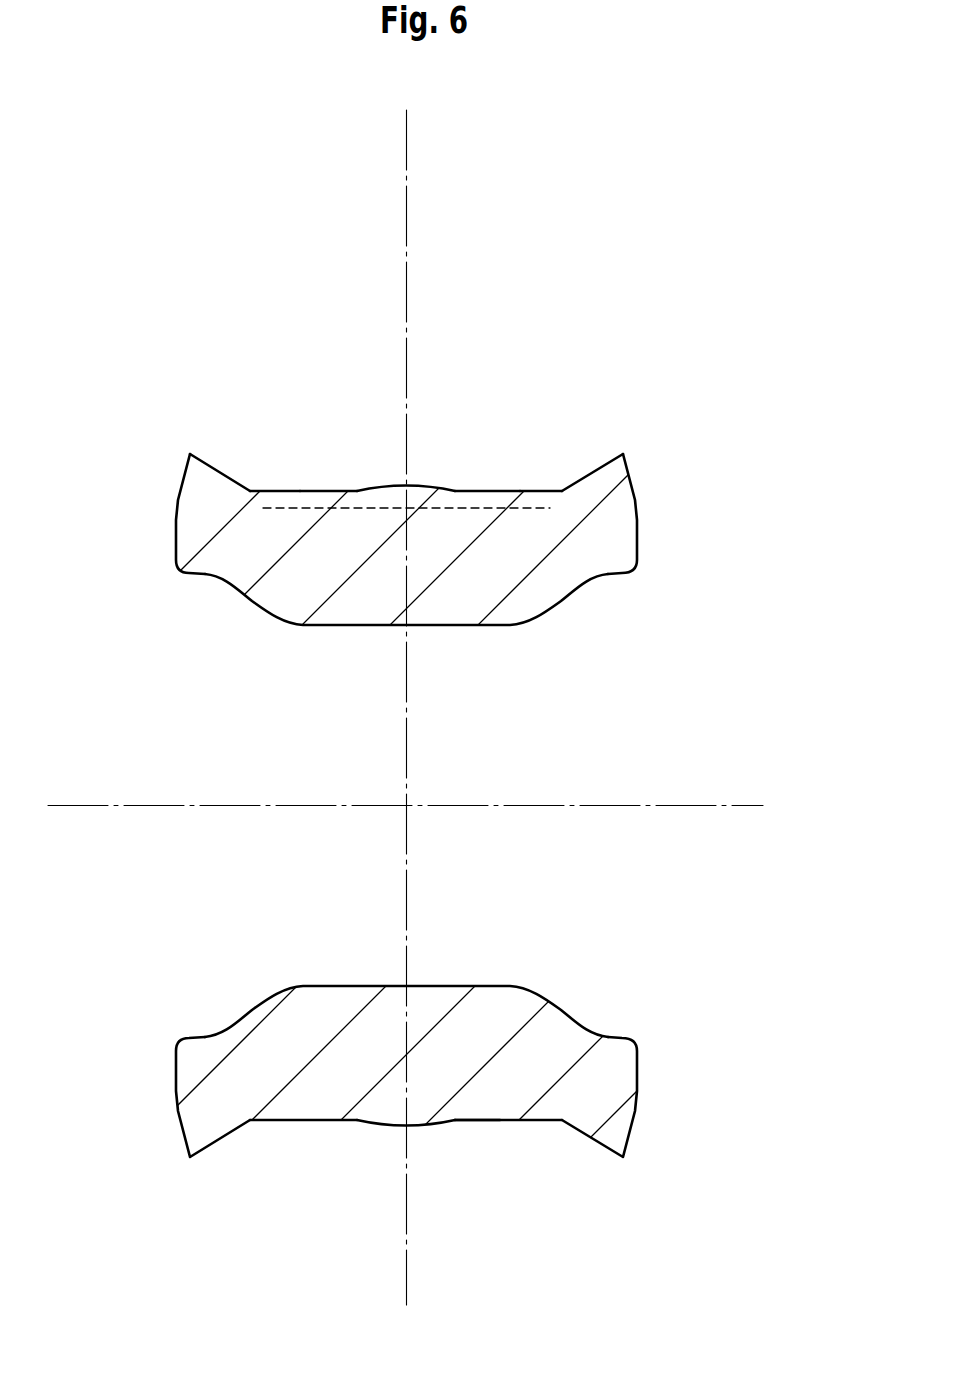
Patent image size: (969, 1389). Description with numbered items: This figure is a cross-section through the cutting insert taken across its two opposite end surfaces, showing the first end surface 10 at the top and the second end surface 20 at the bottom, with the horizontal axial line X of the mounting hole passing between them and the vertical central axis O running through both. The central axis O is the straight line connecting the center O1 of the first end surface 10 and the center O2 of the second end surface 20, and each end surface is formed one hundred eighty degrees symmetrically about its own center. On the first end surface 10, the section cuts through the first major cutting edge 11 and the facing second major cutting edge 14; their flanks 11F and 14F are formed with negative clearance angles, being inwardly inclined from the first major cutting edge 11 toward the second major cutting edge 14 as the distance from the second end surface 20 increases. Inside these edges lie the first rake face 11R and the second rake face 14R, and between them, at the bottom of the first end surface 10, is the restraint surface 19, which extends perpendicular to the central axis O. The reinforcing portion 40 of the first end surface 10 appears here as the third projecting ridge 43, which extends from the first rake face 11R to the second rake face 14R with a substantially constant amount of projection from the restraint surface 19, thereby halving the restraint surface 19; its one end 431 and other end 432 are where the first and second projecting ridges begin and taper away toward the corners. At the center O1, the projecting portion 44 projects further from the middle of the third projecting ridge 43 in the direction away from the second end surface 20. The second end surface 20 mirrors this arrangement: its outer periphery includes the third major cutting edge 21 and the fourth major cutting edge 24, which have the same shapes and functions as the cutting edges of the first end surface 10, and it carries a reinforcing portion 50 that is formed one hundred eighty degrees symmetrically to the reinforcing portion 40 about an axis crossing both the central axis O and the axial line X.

The first end surface 10 is at (411, 433).
The first major cutting edge 11 is at (663, 427).
The flank 11F is at (629, 483).
The first rake face 11R is at (592, 468).
The second major cutting edge 14 is at (170, 454).
The flank 14F is at (180, 485).
The second rake face 14R is at (220, 465).
The restraint surface 19 is at (506, 482).
The reinforcing portion 40 is at (482, 490).
The third projecting ridge 43 is at (416, 377).
The one end of the third projecting ridge 431 is at (563, 488).
The other end of the third projecting ridge 432 is at (252, 492).
The projecting portion 44 is at (406, 487).
The second end surface 20 is at (433, 1143).
The third major cutting edge 21 is at (190, 1157).
The fourth major cutting edge 24 is at (622, 1158).
The reinforcing portion 50 is at (453, 1121).
The central axis O is at (407, 692).
The center of the first end surface O1 is at (406, 487).
The center of the second end surface O2 is at (406, 1125).
The axial line of the mounting hole X is at (421, 809).